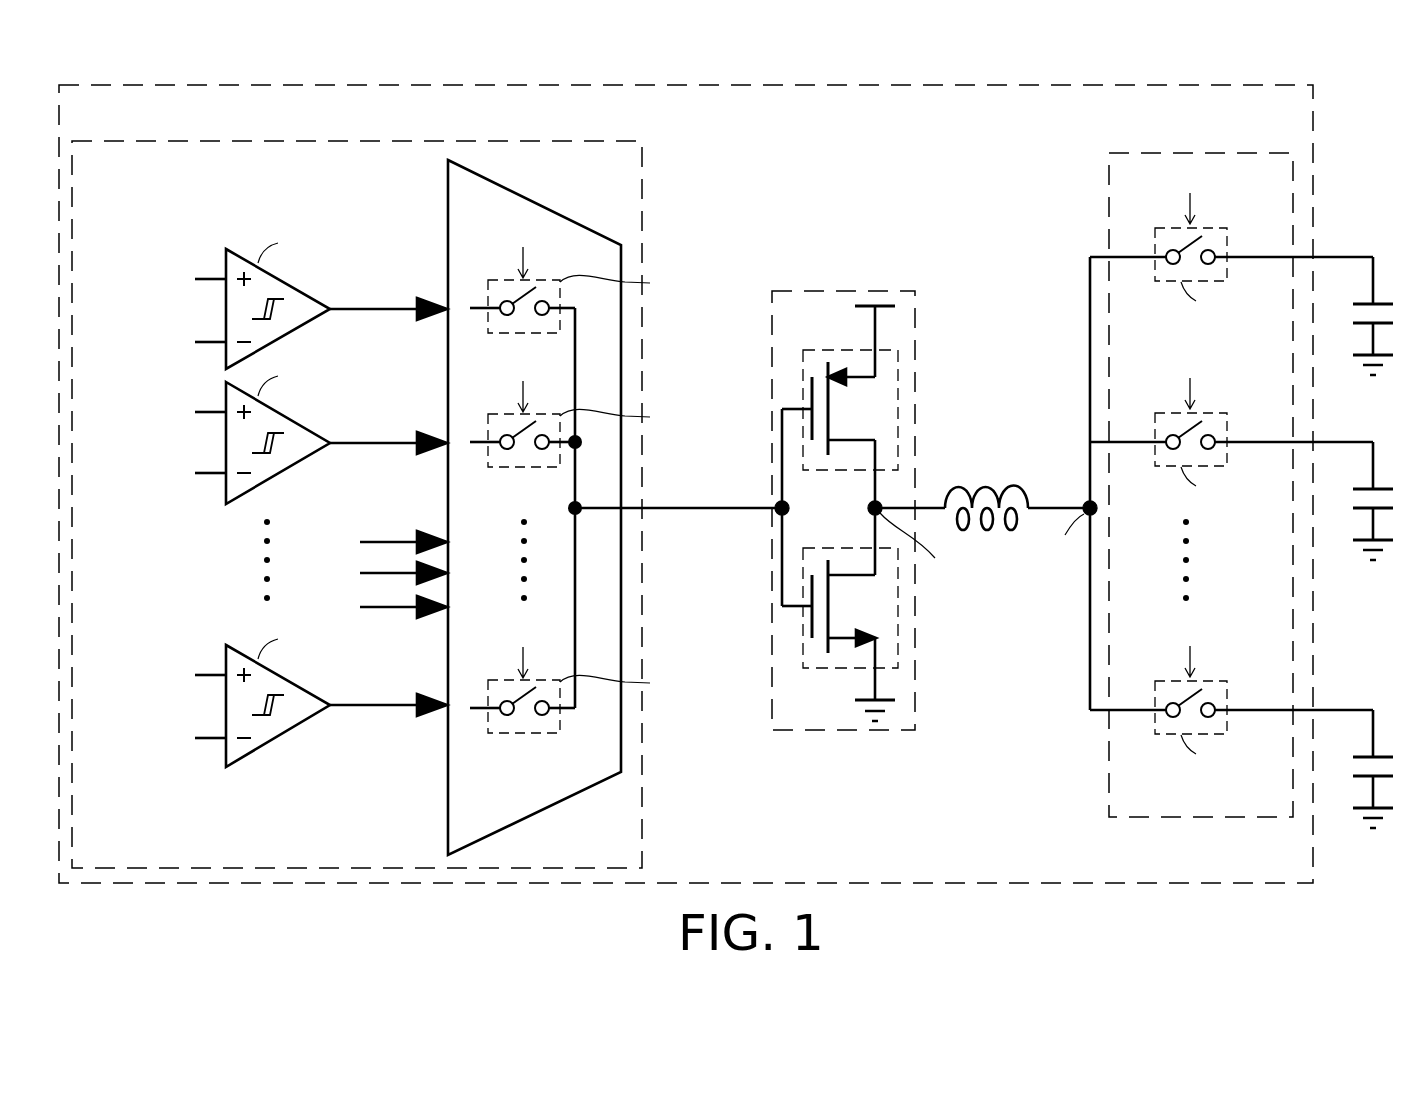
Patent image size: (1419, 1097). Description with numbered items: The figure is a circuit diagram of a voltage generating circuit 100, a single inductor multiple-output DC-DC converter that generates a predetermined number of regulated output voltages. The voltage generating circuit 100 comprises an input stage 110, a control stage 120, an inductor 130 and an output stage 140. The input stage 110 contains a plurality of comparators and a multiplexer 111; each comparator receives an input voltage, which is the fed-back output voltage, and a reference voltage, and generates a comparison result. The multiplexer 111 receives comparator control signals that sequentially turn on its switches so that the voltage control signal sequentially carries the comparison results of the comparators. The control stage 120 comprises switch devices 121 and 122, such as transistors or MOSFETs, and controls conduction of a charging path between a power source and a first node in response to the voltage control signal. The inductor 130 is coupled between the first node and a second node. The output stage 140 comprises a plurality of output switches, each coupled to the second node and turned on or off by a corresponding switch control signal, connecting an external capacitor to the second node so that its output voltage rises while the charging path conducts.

The voltage generating circuit 100 is at (1305, 85).
The input stage 110 is at (590, 141).
The multiplexer 111 is at (568, 218).
The control stage 120 is at (900, 291).
The switch device 121 is at (843, 349).
The switch device 122 is at (843, 548).
The inductor 130 is at (979, 487).
The output stage 140 is at (1215, 153).